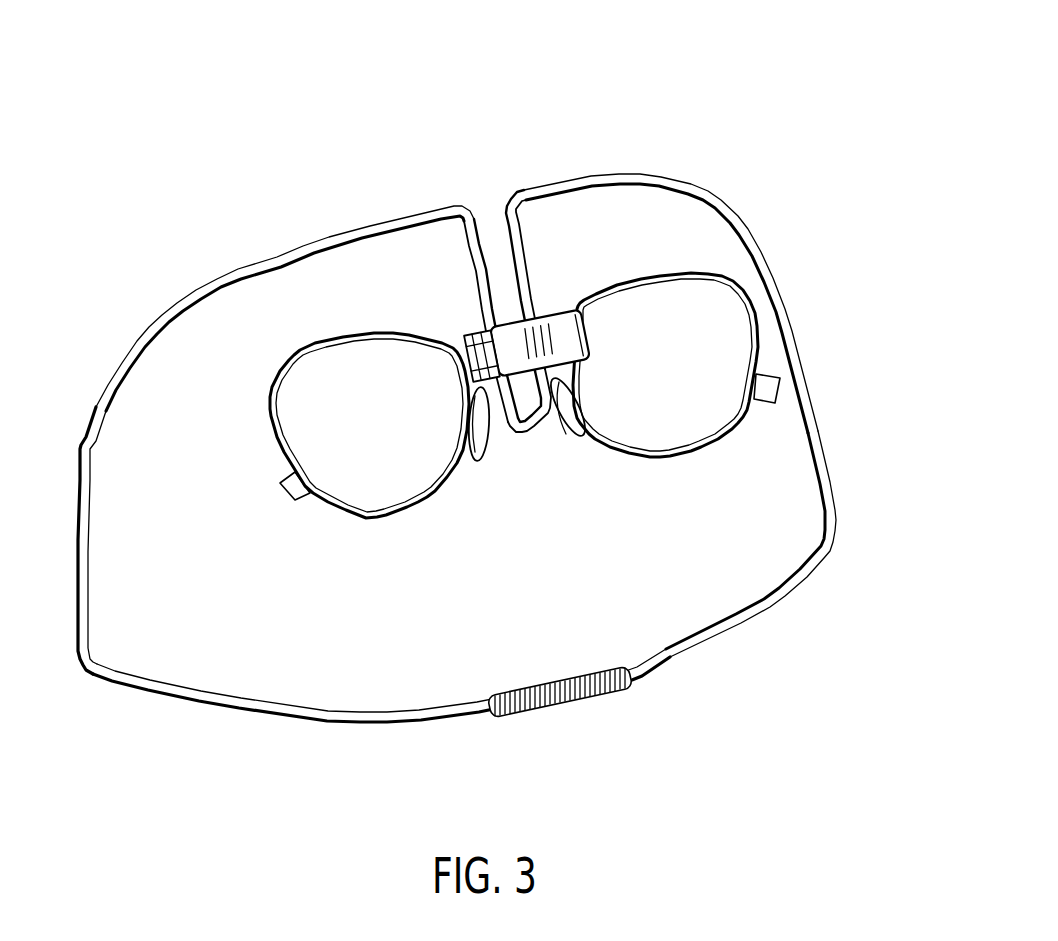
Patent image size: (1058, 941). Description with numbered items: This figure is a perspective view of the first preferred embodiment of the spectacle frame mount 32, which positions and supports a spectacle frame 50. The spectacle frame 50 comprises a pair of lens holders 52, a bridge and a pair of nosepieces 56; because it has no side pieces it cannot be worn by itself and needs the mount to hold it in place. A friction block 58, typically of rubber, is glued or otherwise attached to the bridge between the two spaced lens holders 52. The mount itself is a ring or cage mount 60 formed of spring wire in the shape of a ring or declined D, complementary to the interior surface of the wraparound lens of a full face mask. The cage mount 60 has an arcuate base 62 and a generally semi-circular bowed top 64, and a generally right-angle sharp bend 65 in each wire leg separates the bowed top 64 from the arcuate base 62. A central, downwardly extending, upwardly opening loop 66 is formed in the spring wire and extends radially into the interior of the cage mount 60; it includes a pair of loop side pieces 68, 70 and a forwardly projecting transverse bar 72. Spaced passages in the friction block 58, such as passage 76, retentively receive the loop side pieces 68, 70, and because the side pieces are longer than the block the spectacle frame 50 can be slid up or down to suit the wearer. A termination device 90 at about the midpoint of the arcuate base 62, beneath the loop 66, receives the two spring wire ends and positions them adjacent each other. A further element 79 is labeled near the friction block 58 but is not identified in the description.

The spectacle frame mount 32 is at (744, 132).
The spectacle frame 50 is at (470, 444).
The lens holders 52 is at (660, 277).
The nosepieces 56 is at (563, 441).
The friction block 58 is at (562, 318).
The ring or cage mount 60 is at (369, 189).
The arcuate base 62 is at (347, 723).
The bowed top 64 is at (92, 557).
The sharp bend 65 is at (834, 497).
The loop 66 is at (455, 313).
The loop side piece 68 is at (471, 266).
The loop side piece 70 is at (522, 232).
The transverse bar 72 is at (518, 438).
The passage 76 is at (595, 333).
The clip 79 is at (466, 341).
The termination device 90 is at (591, 656).